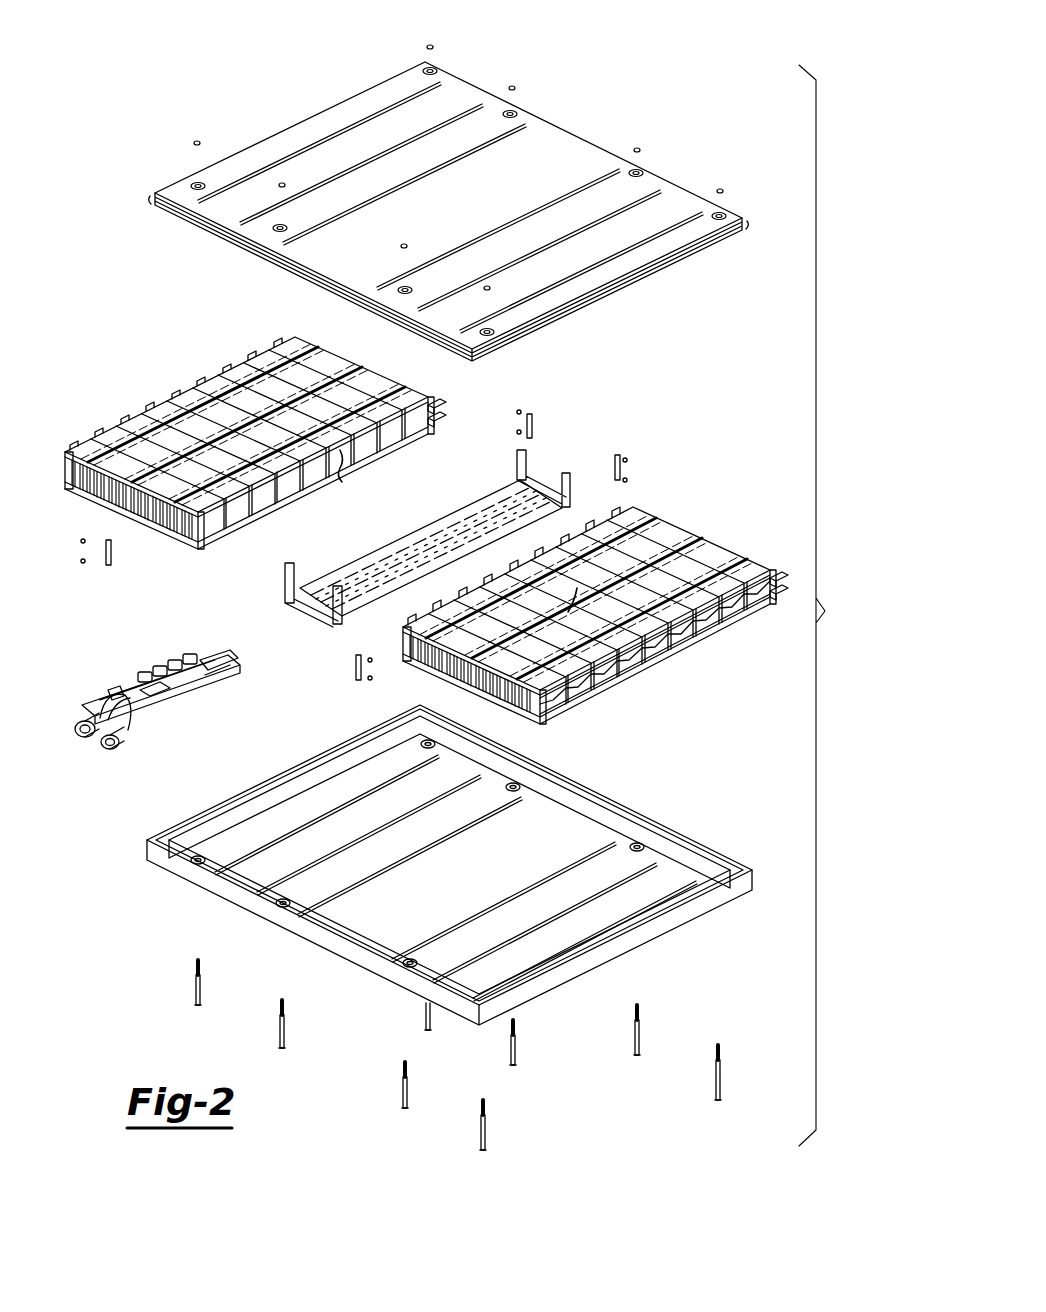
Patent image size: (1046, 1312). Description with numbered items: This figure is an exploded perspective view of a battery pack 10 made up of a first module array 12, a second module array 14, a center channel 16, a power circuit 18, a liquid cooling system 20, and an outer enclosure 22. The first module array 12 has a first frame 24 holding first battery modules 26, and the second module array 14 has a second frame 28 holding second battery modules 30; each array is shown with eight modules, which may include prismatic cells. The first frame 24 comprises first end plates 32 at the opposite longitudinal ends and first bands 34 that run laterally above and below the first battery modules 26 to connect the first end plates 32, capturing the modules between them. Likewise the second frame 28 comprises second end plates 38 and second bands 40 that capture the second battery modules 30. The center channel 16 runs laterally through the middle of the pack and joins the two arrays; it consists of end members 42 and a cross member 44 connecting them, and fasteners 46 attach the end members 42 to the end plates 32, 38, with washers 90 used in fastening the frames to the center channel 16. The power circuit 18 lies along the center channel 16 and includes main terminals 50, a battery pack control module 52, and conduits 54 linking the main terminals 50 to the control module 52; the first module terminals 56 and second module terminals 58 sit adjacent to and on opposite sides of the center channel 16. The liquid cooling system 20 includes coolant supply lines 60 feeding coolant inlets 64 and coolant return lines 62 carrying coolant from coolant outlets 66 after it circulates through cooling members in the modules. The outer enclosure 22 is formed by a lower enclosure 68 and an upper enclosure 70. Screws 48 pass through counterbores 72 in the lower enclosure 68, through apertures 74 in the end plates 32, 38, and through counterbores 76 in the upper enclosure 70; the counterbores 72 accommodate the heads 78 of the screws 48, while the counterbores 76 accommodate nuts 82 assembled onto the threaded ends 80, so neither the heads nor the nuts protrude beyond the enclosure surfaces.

The battery pack 10 is at (825, 605).
The first module array 12 is at (246, 438).
The second module array 14 is at (600, 606).
The center channel 16 is at (419, 550).
The power circuit 18 is at (149, 704).
The liquid cooling system 20 is at (771, 570).
The outer enclosure 22 is at (449, 189).
The first frame 24 is at (354, 367).
The first battery modules 26 is at (252, 370).
The second frame 28 is at (711, 535).
The second battery modules 30 is at (730, 610).
The first end plates 32 is at (421, 396).
The first bands 34 is at (143, 427).
The second end plates 38 is at (640, 512).
The second bands 40 is at (578, 589).
The end members 42 is at (298, 585).
The cross member 44 is at (378, 560).
The fasteners 46 is at (84, 543).
The screws 48 is at (457, 1052).
The main terminals 50 is at (88, 720).
The battery pack control module (BPCM) 52 is at (193, 653).
The conduits 54 is at (126, 700).
The first module terminals 56 is at (350, 470).
The second module terminals 58 is at (618, 512).
The coolant supply lines 60 is at (436, 428).
The coolant return lines 62 is at (436, 403).
The coolant inlets 64 is at (690, 655).
The coolant outlets 66 is at (650, 670).
The lower enclosure 68 is at (449, 852).
The upper enclosure 70 is at (335, 122).
The counterbores 72 is at (196, 857).
The apertures 74 is at (70, 452).
The counterbores 76 is at (196, 183).
The heads 78 is at (196, 1005).
The threaded ends 80 is at (195, 966).
The nuts 82 is at (199, 141).
The washers 90 is at (110, 555).